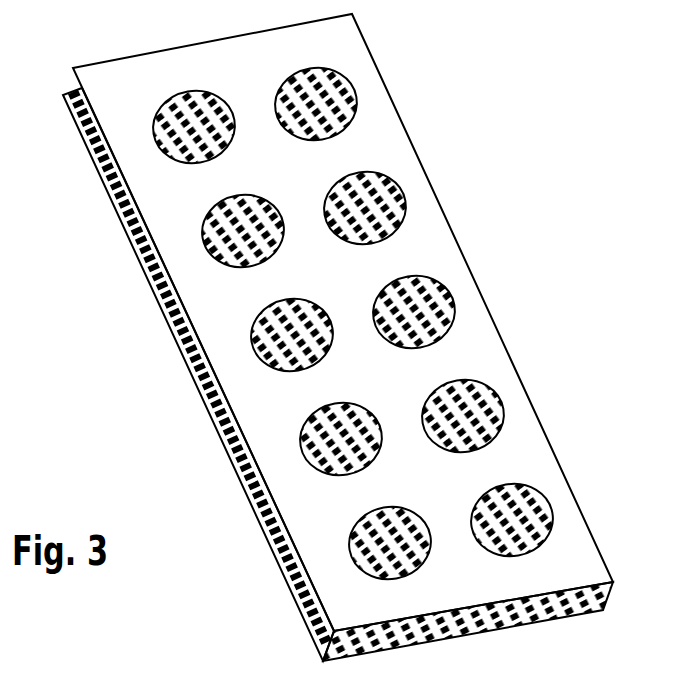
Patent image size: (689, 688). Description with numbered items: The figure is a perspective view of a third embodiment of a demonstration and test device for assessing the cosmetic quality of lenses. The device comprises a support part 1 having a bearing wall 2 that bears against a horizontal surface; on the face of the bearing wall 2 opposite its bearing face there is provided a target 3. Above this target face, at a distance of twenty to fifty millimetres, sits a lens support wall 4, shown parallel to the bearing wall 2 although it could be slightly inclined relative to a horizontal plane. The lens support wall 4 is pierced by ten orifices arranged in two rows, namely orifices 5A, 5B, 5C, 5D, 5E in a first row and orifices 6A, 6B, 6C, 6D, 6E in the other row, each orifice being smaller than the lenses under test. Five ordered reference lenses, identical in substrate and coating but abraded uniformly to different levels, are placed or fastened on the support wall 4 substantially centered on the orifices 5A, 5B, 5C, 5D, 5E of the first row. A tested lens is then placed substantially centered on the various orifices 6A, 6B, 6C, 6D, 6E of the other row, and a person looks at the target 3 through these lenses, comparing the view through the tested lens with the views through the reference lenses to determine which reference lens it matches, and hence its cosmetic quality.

The support part 1 is at (502, 248).
The bearing wall 2 is at (452, 640).
The target 3 is at (318, 640).
The lens support wall 4 is at (145, 67).
The orifice of the first row 5A is at (337, 75).
The orifice of the first row 5B is at (386, 190).
The orifice of the first row 5C is at (453, 312).
The orifice of the first row 5D is at (496, 410).
The orifice of the first row 5E is at (548, 512).
The orifice of the other row 6A is at (158, 125).
The orifice of the other row 6B is at (205, 245).
The orifice of the other row 6C is at (254, 348).
The orifice of the other row 6D is at (302, 454).
The orifice of the other row 6E is at (354, 563).